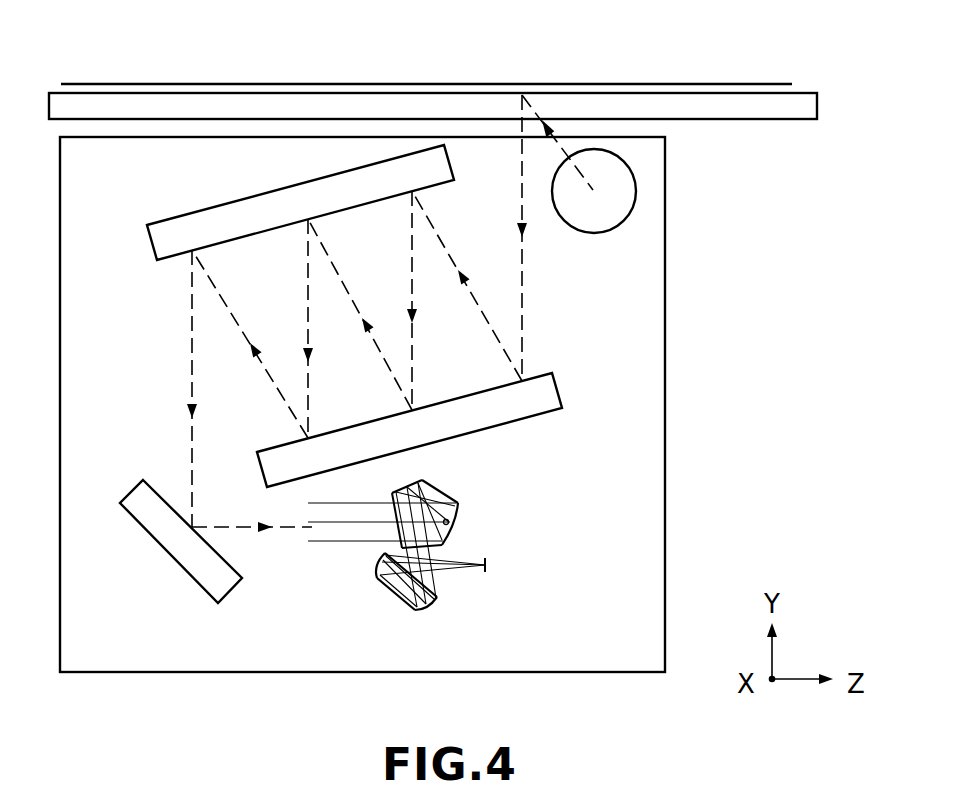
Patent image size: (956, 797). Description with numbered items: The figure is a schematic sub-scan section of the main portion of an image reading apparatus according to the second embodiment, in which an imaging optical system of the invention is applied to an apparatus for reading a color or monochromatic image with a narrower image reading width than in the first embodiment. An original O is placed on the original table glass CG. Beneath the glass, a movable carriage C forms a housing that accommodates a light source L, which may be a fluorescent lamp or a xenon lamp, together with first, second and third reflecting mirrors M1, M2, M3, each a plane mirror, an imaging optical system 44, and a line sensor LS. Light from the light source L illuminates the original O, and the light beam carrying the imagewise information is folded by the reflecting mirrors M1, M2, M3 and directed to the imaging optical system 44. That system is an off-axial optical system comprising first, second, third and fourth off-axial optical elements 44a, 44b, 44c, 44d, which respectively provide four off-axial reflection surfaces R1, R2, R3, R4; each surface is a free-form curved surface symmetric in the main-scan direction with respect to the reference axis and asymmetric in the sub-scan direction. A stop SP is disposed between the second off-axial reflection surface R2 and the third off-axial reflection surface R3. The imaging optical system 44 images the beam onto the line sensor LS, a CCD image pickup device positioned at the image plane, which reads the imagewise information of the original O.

The original O is at (475, 84).
The original table glass CG is at (720, 110).
The movable carriage C is at (665, 341).
The light source L is at (597, 221).
The first reflecting mirror M1 is at (500, 427).
The second reflecting mirror M2 is at (220, 202).
The third reflecting mirror M3 is at (160, 550).
The imaging optical system 44 is at (433, 560).
The first off-axial optical element 44a is at (458, 501).
The second off-axial optical element 44b is at (392, 493).
The third off-axial optical element 44c is at (437, 599).
The fourth off-axial optical element 44d is at (372, 553).
The first off-axial reflection surface R1 is at (449, 522).
The second off-axial reflection surface R2 is at (408, 485).
The third off-axial reflection surface R3 is at (440, 598).
The fourth off-axial reflection surface R4 is at (380, 583).
The stop SP is at (487, 565).
The line sensor LS is at (488, 567).